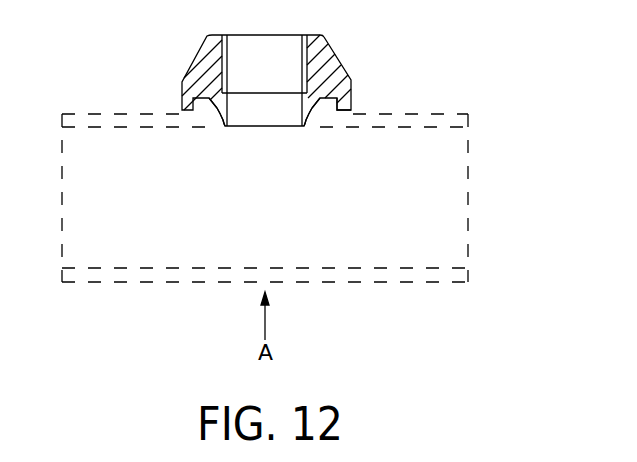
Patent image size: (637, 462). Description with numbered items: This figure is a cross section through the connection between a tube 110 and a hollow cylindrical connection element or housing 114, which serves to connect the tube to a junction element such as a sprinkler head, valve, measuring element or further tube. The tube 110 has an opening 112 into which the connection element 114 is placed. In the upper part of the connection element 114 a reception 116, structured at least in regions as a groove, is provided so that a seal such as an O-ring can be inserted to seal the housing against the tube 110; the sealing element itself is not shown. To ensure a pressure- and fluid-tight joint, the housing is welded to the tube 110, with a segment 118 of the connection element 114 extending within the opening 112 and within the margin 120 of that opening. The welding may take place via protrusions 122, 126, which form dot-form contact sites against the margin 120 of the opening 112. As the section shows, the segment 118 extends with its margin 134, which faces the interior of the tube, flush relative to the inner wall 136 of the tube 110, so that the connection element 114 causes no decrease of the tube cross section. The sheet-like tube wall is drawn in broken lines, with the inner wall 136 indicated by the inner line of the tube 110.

The tube 110 is at (335, 273).
The opening 112 is at (258, 131).
The connection element 114 is at (329, 47).
The reception 116 is at (203, 100).
The segment 118 is at (310, 128).
The margin 120 is at (317, 118).
The protrusion 122 is at (338, 102).
The protrusion 126 is at (215, 120).
The margin 134 is at (221, 128).
The inner wall 136 is at (200, 268).